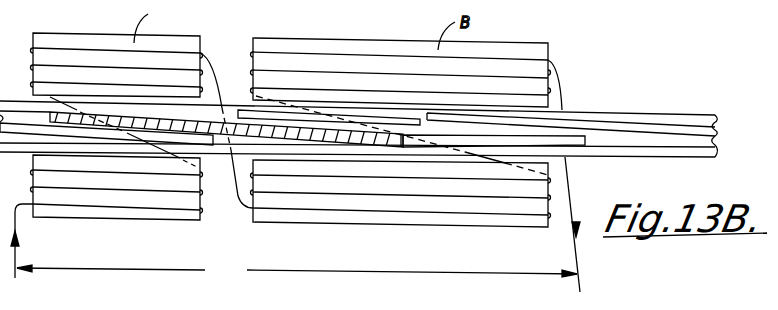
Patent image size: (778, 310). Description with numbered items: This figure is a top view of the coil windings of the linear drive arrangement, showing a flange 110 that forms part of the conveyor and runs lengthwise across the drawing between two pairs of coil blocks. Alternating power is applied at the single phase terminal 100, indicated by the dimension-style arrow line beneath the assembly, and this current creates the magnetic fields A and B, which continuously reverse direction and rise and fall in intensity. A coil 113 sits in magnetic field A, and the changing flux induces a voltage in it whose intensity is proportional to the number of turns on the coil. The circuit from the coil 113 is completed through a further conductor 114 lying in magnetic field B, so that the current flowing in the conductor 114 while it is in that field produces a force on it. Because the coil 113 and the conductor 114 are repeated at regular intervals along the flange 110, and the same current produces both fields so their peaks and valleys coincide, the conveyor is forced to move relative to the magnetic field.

The flange 110 is at (718, 122).
The coil 113 is at (70, 40).
The conductor 114 is at (122, 212).
The single phase terminal 100 is at (297, 270).